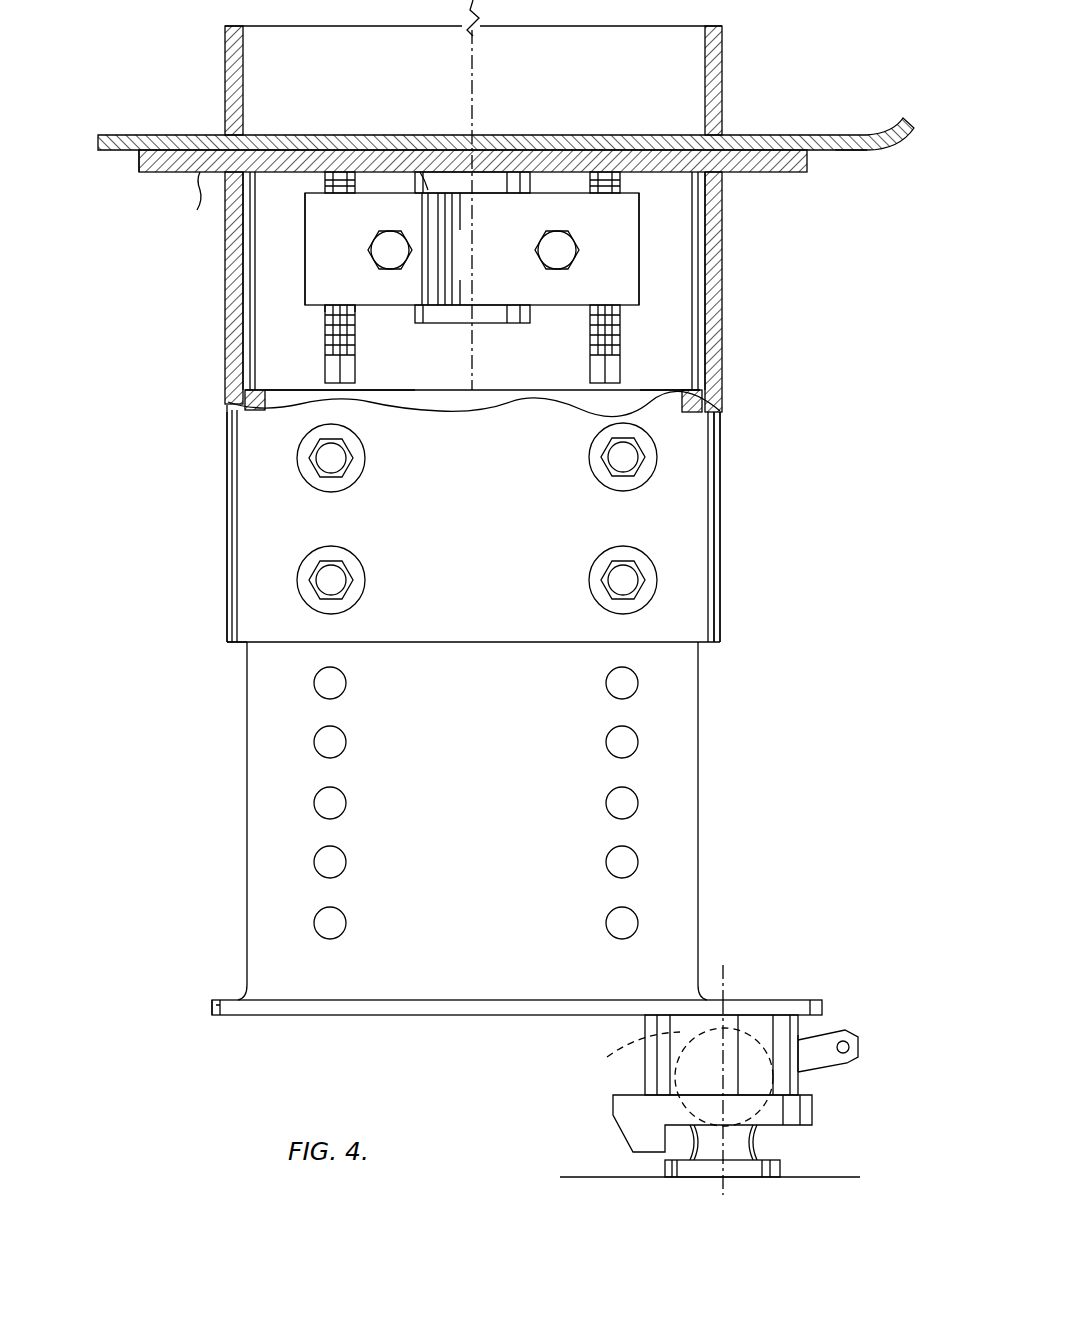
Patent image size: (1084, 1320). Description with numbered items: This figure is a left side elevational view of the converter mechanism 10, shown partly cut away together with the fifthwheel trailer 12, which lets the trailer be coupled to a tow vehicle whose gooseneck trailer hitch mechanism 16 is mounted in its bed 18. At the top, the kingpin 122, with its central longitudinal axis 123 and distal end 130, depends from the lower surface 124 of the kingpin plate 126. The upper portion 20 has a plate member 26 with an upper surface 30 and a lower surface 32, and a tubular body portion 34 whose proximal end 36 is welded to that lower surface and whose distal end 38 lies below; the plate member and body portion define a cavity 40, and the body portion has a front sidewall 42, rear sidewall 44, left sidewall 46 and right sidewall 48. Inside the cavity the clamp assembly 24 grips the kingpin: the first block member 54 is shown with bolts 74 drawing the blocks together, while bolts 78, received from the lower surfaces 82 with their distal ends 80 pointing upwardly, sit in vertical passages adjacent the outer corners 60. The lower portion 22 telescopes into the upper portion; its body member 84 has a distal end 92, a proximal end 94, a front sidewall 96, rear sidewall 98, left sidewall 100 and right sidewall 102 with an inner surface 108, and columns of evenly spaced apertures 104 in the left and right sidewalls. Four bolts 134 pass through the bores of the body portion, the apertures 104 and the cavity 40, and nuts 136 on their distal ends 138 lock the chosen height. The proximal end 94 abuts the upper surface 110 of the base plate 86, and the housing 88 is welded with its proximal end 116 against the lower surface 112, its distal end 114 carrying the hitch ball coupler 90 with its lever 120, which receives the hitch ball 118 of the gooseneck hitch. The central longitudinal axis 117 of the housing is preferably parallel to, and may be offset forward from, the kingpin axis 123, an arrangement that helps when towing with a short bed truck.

The converter mechanism 10 is at (185, 606).
The fifthwheel trailer 12 is at (722, 70).
The gooseneck trailer hitch mechanism 16 is at (778, 1170).
The bed 18 is at (590, 1177).
The upper portion 20 is at (712, 605).
The lower portion 22 is at (698, 840).
The clamp assembly 24 is at (630, 226).
The plate member 26 is at (150, 172).
The upper surface 30 is at (300, 140).
The lower surface 32 is at (197, 203).
The body portion 34 is at (245, 455).
The proximal end 36 is at (722, 183).
The distal end 38 is at (232, 642).
The cavity 40 is at (472, 374).
The front sidewall 42 is at (722, 282).
The rear sidewall 44 is at (245, 352).
The left sidewall 46 is at (700, 545).
The right sidewall 48 is at (245, 268).
The first block member 54 is at (318, 270).
The outer corners 60 is at (640, 275).
The bolts 74 is at (373, 247).
The bolts 78 is at (350, 368).
The distal ends 80 is at (322, 178).
The lower surfaces 82 is at (318, 310).
The body member 84 is at (252, 800).
The base plate 86 is at (215, 1003).
The housing 88 is at (792, 1030).
The hitch ball coupler 90 is at (613, 1113).
The distal end 92 is at (658, 390).
The proximal end 94 is at (703, 998).
The front sidewall 96 is at (705, 405).
The rear sidewall 98 is at (262, 390).
The left sidewall 100 is at (250, 530).
The right sidewall 102 is at (540, 402).
The apertures 104 is at (604, 858).
The inner surface 108 is at (420, 392).
The upper surface 110 is at (785, 1000).
The lower surface 112 is at (417, 1020).
The distal end 114 is at (805, 1085).
The proximal end 116 is at (660, 1018).
The central longitudinal axis 117 is at (723, 1192).
The hitch ball 118 is at (640, 1038).
The lever 120 is at (858, 1043).
The kingpin 122 is at (420, 150).
The central longitudinal axis 123 is at (474, 88).
The lower surface 124 is at (855, 152).
The kingpin plate 126 is at (135, 135).
The distal end 130 is at (483, 323).
The bolts 134 is at (336, 455).
The nuts 136 is at (331, 476).
The distal ends 138 is at (336, 583).